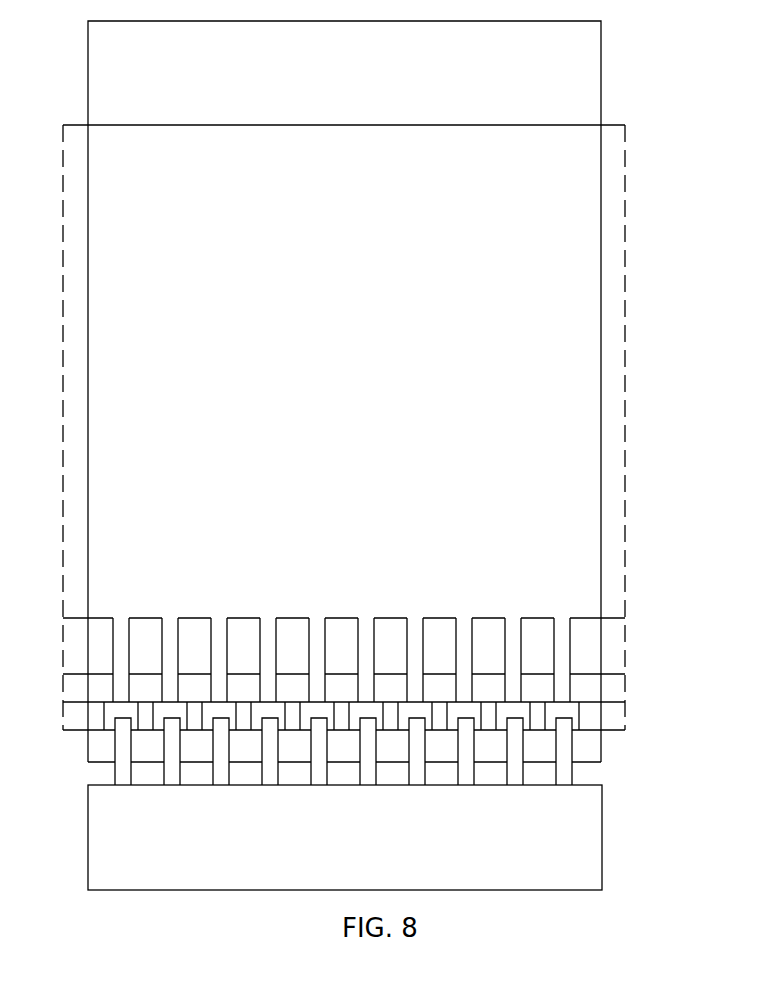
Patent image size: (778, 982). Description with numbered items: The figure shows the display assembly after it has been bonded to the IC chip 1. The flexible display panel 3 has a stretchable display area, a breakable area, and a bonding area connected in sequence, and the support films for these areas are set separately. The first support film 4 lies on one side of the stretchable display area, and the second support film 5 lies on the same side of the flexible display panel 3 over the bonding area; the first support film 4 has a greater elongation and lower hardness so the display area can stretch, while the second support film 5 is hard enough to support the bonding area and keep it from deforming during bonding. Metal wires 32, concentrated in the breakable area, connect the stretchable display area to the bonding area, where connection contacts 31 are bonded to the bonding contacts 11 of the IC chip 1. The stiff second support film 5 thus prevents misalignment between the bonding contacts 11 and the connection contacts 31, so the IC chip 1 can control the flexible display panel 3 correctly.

The IC chip 1 is at (585, 857).
The bonding contacts 11 is at (120, 774).
The flexible display panel 3 is at (615, 605).
The connection contacts 31 is at (122, 712).
The metal wires 32 is at (123, 663).
The first support film 4 is at (577, 93).
The second support film 5 is at (583, 752).